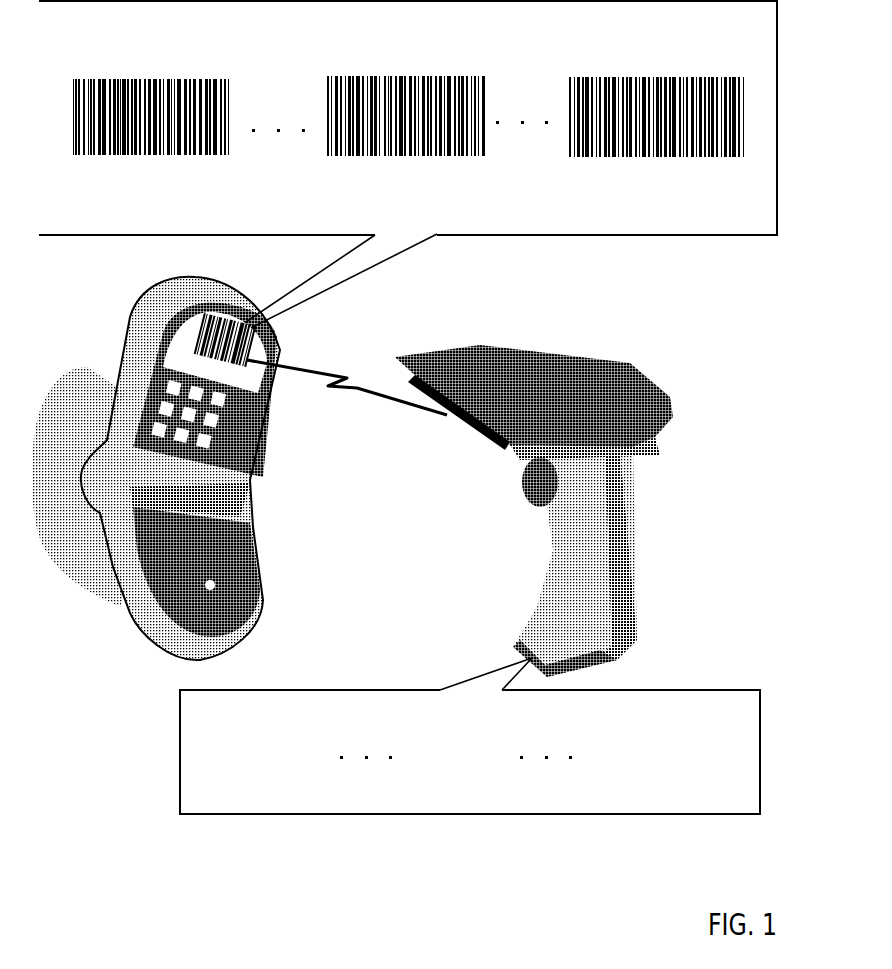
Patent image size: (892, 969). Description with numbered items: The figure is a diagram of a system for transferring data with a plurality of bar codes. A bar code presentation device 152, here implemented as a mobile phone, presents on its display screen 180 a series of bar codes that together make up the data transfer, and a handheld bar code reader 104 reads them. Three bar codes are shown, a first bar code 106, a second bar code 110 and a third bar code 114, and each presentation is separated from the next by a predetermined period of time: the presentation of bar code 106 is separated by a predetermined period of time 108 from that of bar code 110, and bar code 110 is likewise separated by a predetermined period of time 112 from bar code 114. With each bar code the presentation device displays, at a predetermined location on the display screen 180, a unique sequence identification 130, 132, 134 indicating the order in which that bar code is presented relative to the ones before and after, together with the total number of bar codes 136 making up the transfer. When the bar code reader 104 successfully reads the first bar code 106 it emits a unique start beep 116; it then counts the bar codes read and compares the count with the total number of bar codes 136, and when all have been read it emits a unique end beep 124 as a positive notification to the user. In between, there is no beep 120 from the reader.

The bar code reader 104 is at (692, 551).
The bar code 106 is at (194, 67).
The predetermined period of time 108 is at (289, 114).
The bar code 110 is at (451, 68).
The predetermined period of time 112 is at (541, 108).
The bar code 114 is at (686, 68).
The start beep 116 is at (279, 740).
The no beep 120 is at (461, 740).
The end beep 124 is at (657, 740).
The unique sequence identification 130 is at (179, 198).
The unique sequence identification 132 is at (427, 196).
The unique sequence identification 134 is at (682, 199).
The total number of bar codes 136 is at (243, 215).
The bar code presentation device 152 is at (152, 468).
The display screen 180 is at (193, 362).